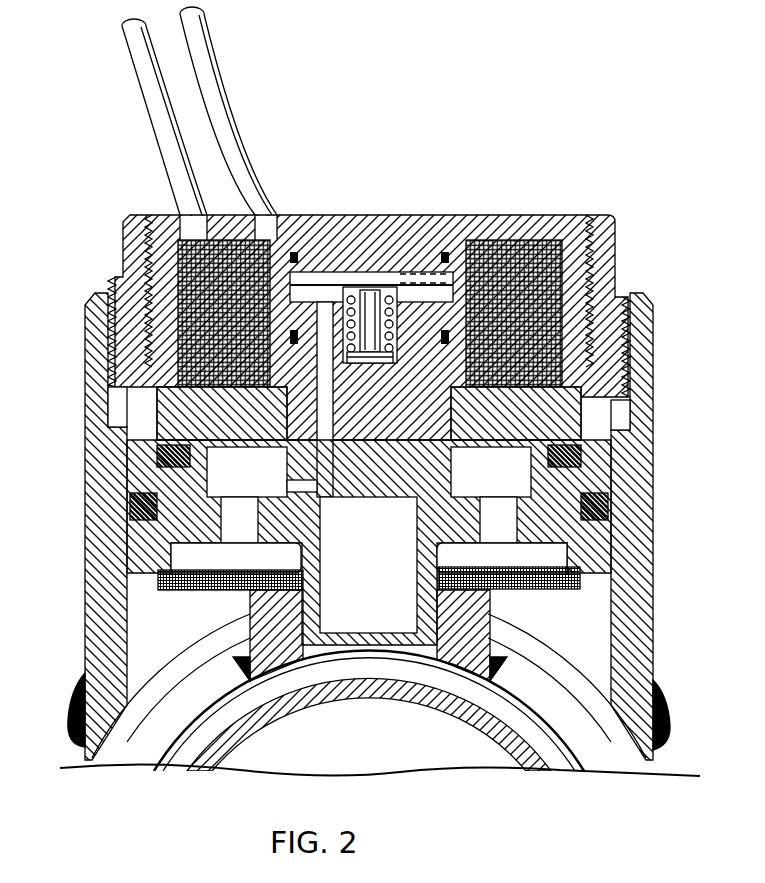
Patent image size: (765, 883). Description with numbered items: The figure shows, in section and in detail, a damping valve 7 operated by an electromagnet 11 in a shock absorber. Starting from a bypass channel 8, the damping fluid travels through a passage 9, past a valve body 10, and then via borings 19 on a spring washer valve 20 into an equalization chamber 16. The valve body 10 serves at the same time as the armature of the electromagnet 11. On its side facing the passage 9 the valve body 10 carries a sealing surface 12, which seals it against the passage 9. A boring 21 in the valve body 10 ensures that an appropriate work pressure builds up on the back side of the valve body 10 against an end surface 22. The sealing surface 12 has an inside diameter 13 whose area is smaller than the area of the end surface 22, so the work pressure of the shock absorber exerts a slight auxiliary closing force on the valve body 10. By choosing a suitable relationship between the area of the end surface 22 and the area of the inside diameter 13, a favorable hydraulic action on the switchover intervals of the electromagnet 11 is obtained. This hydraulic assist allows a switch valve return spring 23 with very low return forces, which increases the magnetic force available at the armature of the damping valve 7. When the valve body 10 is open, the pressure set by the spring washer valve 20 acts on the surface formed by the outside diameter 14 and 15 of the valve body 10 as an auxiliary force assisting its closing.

The damping valve 7 is at (663, 375).
The bypass channel 8 is at (538, 748).
The passage 9 is at (386, 565).
The valve body 10 is at (410, 390).
The electromagnet 11 is at (543, 243).
The sealing surface 12 is at (460, 483).
The inside diameter 13 is at (460, 458).
The outside diameter 14 is at (290, 460).
The outside diameter 15 is at (290, 484).
The equalization chamber 16 is at (545, 655).
The borings 19 is at (505, 527).
The spring washer valve 20 is at (575, 580).
The boring 21 is at (290, 433).
The end surface 22 is at (287, 291).
The switch valve return spring 23 is at (398, 280).